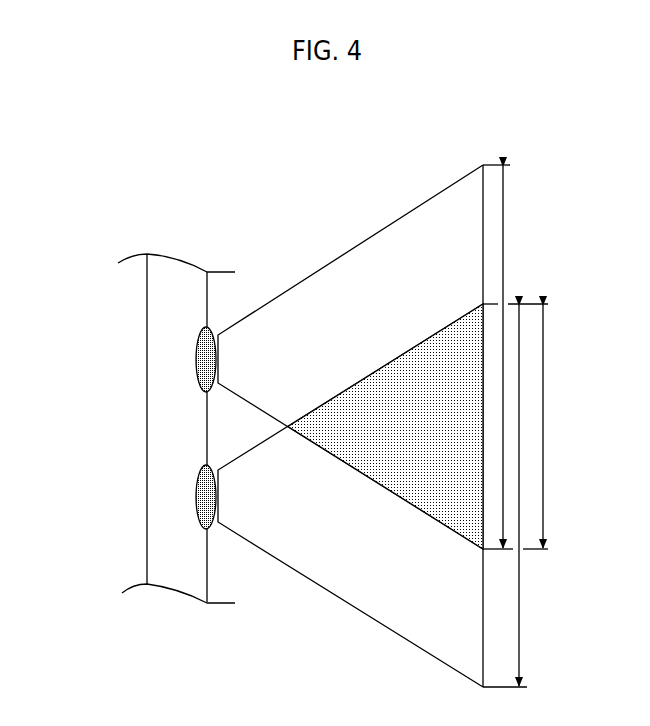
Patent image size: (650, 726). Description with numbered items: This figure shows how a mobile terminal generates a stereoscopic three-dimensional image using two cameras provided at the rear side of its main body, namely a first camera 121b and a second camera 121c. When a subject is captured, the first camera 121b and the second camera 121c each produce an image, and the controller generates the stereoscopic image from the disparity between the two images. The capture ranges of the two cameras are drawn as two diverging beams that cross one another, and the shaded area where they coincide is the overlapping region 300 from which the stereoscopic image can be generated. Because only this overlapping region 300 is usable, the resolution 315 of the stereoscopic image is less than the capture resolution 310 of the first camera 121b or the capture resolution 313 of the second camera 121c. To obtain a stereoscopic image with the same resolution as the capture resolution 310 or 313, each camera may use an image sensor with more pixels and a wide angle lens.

The first camera 121b is at (197, 366).
The second camera 121c is at (197, 507).
The overlapping region 300 is at (448, 402).
The capture resolution of the first camera 310 is at (503, 265).
The capture resolution of the second camera 313 is at (519, 608).
The resolution of the stereoscopic 3D image 315 is at (543, 428).